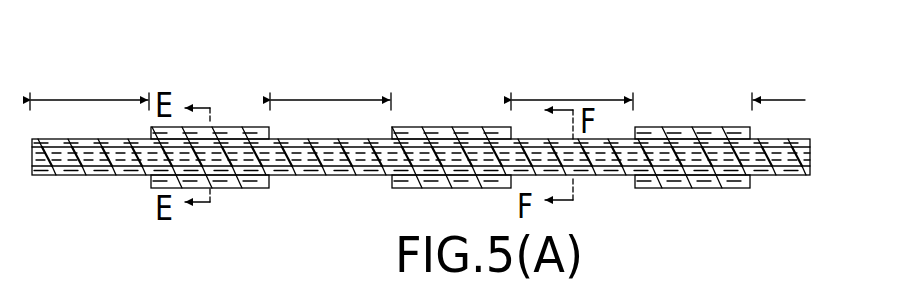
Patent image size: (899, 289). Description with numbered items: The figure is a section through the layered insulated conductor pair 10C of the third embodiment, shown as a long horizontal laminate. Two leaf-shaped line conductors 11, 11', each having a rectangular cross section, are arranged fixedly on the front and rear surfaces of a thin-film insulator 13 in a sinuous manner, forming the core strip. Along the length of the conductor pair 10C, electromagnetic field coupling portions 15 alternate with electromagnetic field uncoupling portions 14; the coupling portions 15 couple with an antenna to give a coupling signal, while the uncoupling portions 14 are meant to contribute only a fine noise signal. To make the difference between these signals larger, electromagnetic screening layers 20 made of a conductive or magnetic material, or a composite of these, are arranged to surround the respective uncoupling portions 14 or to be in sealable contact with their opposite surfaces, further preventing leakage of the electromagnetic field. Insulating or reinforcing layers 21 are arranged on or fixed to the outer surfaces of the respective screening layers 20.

The layered insulated conductor pair 10C is at (603, 178).
The line conductor 11 is at (444, 105).
The line conductor 11' is at (435, 203).
The insulator 13 is at (812, 157).
The electromagnetic field uncoupling portion 14 is at (222, 127).
The electromagnetic field coupling portion 15 is at (88, 100).
The electromagnetic screening layer 20 is at (248, 130).
The insulating or reinforcing layer 21 is at (238, 127).